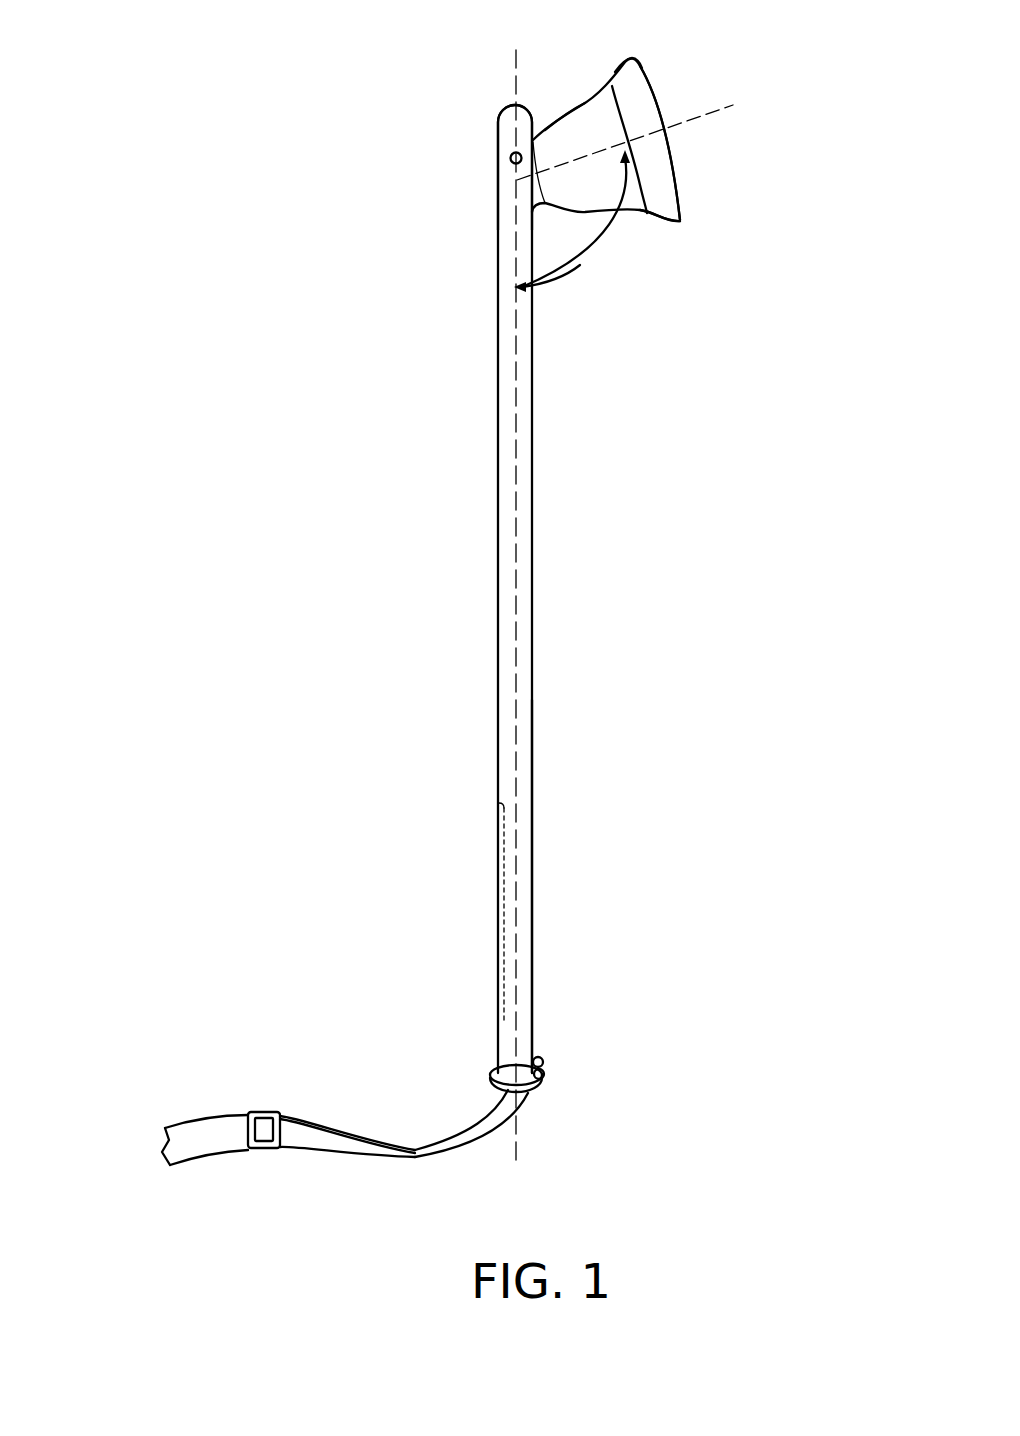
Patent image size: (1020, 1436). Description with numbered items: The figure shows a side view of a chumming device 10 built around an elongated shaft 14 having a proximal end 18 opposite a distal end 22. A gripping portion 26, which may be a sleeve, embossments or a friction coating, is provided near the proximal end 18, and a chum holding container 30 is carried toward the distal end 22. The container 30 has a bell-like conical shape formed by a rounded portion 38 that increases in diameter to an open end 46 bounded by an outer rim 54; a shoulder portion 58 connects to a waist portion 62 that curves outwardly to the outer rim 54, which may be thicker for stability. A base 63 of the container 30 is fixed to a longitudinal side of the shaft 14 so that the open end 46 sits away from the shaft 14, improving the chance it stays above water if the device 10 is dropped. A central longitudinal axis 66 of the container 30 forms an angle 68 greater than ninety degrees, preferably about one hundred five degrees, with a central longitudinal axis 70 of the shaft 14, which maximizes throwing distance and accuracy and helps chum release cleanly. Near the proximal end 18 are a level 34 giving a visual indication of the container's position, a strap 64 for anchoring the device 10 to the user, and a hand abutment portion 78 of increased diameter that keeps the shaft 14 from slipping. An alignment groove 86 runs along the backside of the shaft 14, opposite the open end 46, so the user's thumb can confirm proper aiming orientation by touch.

The chumming device 10 is at (164, 679).
The shaft 14 is at (462, 529).
The proximal end 18 is at (540, 1084).
The distal end 22 is at (466, 133).
The gripping portion 26 is at (534, 922).
The chum holding container 30 is at (709, 66).
The level 34 is at (545, 1067).
The rounded portion 38 is at (633, 216).
The open end 46 is at (703, 177).
The outer rim 54 is at (680, 222).
The shoulder portion 58 is at (580, 106).
The waist portion 62 is at (626, 68).
The base 63 is at (533, 140).
The strap 64 is at (163, 1138).
The central longitudinal axis of the container 66 is at (710, 128).
The angle 68 is at (580, 268).
The central longitudinal axis of the shaft 70 is at (518, 748).
The hand abutment portion 78 is at (490, 1078).
The alignment groove 86 is at (503, 900).